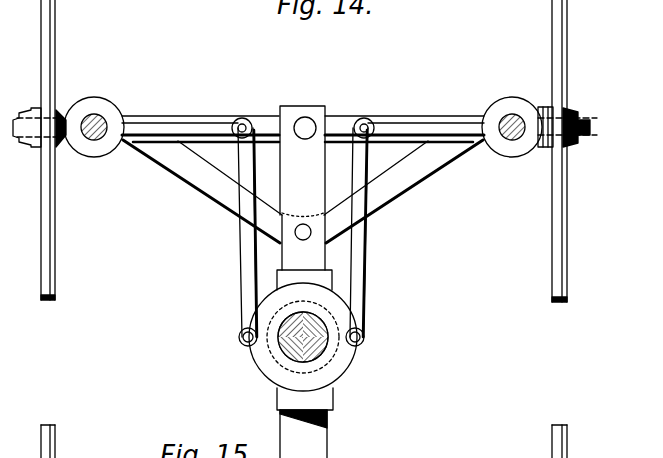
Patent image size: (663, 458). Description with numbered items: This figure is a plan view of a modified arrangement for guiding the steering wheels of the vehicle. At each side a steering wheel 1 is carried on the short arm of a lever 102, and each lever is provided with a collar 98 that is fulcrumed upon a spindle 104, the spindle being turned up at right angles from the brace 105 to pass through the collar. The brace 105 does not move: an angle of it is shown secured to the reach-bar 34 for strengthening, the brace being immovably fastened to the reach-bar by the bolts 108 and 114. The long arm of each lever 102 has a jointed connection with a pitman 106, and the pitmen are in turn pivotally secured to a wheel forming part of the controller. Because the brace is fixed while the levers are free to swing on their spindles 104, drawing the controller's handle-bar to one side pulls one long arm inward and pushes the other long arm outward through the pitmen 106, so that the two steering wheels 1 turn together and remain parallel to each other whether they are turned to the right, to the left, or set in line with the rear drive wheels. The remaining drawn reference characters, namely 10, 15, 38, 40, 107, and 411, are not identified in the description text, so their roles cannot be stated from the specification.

The steering wheel 1 is at (43, 77).
The axle end 10 is at (103, 120).
The frame member 15 is at (248, 449).
The reach-bar 34 is at (262, 425).
The housing 38 is at (330, 280).
The shaft 40 is at (327, 335).
The collar 98 is at (102, 150).
The lever 102 is at (168, 127).
The spindle 104 is at (515, 110).
The brace 105 is at (192, 170).
The pitman 106 is at (242, 255).
The pivot pin 107 is at (245, 338).
The bolt 108 is at (297, 240).
The bolt 114 is at (306, 127).
The flange 411 is at (290, 368).